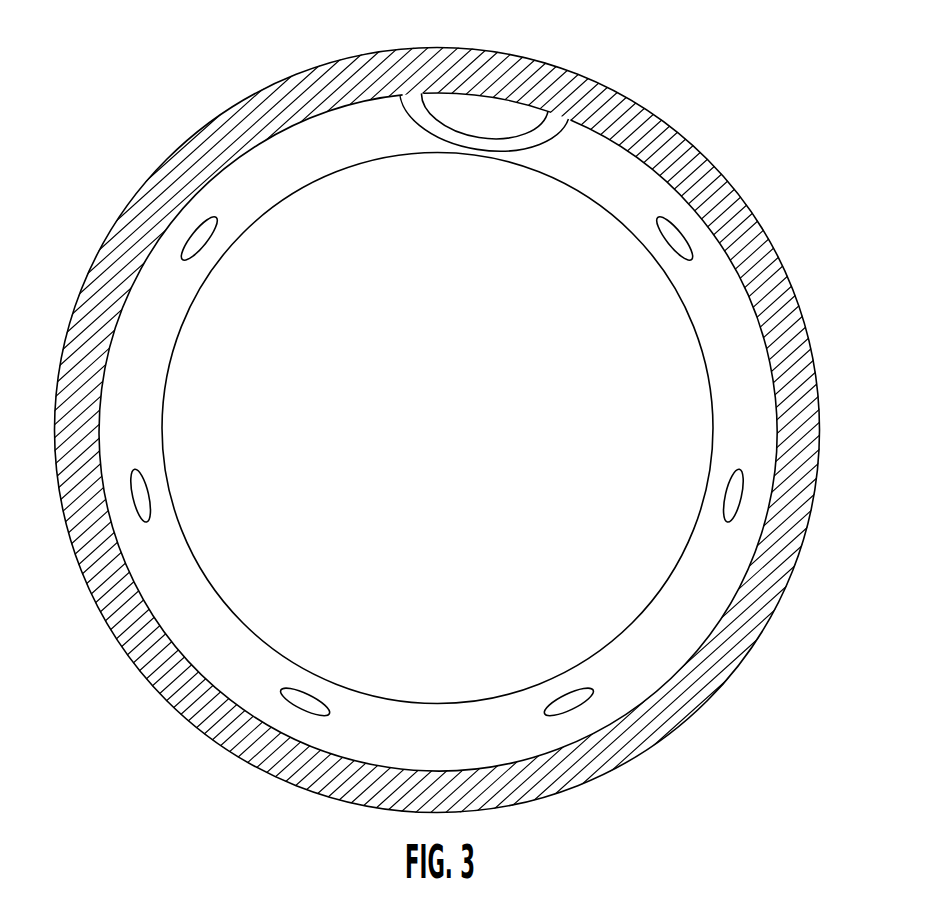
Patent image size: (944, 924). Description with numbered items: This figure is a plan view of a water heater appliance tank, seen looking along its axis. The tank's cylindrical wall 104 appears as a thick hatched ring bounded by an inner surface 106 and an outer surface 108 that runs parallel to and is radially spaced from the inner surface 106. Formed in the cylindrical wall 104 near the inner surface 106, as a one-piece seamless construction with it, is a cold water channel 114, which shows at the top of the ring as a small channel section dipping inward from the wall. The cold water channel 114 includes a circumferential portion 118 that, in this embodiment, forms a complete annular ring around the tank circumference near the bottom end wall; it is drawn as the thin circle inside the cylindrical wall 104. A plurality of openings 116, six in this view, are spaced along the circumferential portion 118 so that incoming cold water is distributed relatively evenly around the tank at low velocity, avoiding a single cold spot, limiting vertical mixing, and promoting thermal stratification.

The cylindrical wall 104 is at (752, 223).
The inner surface 106 is at (713, 627).
The outer surface 108 is at (722, 672).
The cold water channel 114 is at (497, 115).
The openings 116 is at (200, 242).
The circumferential portion 118 is at (356, 140).